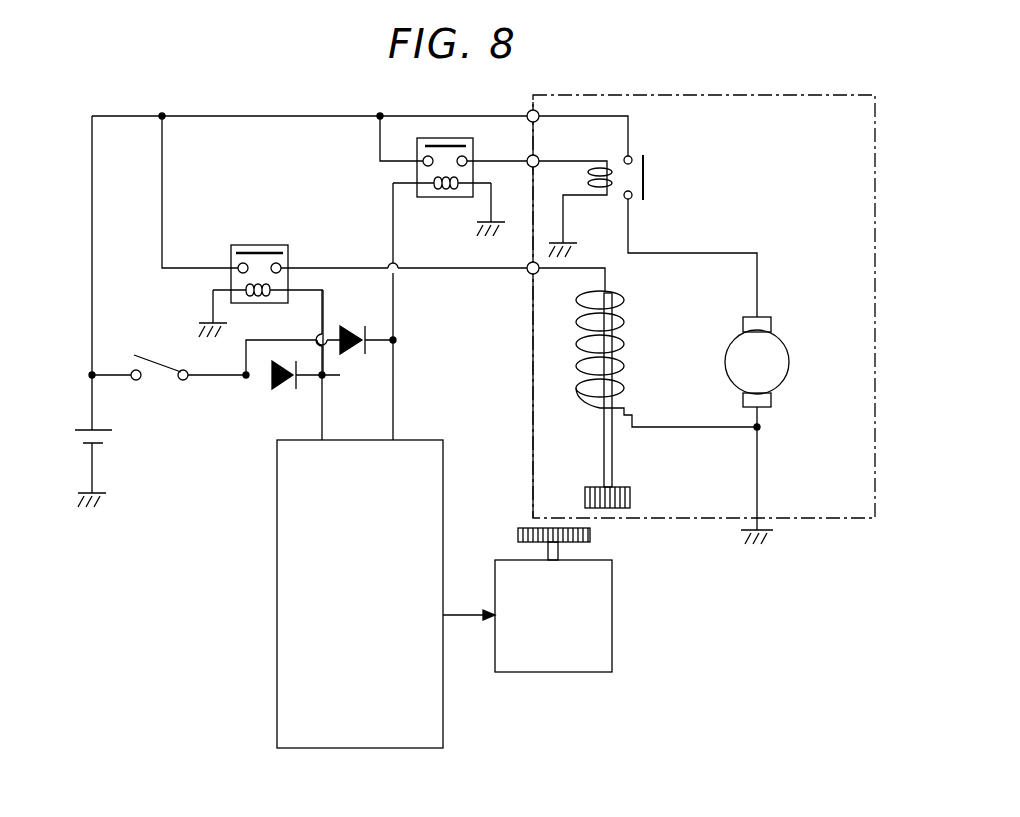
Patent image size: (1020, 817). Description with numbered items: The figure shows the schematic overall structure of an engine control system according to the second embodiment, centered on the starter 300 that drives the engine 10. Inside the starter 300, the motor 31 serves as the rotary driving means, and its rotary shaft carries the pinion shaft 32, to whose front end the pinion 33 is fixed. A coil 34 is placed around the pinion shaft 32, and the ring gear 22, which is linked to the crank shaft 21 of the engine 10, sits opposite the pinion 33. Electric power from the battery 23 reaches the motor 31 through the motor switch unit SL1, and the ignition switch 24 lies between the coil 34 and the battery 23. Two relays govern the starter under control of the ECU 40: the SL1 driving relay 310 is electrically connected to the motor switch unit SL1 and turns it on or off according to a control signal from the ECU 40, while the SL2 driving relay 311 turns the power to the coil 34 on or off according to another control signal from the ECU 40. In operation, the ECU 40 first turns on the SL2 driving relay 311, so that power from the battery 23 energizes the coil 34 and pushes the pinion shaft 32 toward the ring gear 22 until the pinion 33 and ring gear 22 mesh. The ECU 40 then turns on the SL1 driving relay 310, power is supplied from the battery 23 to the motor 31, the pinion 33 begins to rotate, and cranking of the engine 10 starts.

The starter motor 300 is at (786, 95).
The SL2 driving relay 311 is at (260, 245).
The SL1 driving relay 310 is at (433, 198).
The ignition switch 24 is at (150, 353).
The battery 23 is at (80, 428).
The motor switch unit SL1 is at (645, 175).
The coil 34 is at (620, 305).
The starter motor 31 is at (790, 360).
The pinion shaft 32 is at (613, 403).
The pinion 33 is at (630, 497).
The ring gear 22 is at (518, 535).
The crank shaft 21 is at (558, 550).
The engine 10 is at (612, 637).
The ECU 40 is at (443, 723).